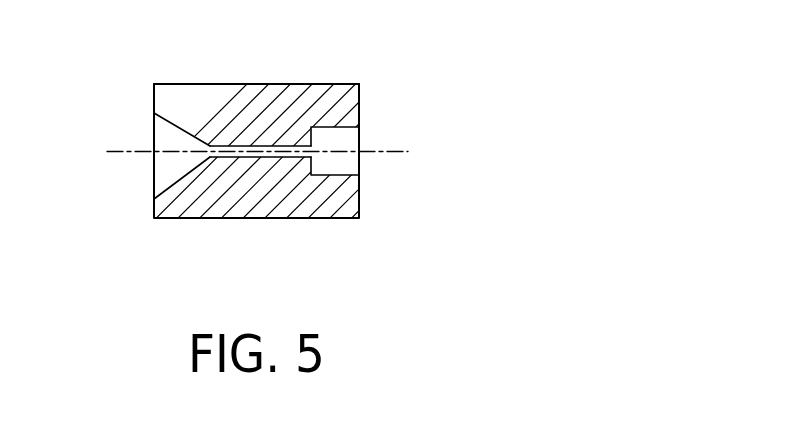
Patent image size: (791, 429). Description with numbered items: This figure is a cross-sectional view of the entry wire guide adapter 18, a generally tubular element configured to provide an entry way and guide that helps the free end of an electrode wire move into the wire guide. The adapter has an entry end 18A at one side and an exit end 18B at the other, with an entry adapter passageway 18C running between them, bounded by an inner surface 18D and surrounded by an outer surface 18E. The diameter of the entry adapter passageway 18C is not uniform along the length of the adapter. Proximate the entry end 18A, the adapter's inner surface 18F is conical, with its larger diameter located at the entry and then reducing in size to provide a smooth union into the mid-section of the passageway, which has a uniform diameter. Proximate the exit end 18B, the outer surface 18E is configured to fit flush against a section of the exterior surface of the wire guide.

The entry wire guide adapter 18 is at (318, 193).
The entry end 18A is at (154, 202).
The exit end 18B is at (359, 188).
The entry adapter passageway 18C is at (242, 157).
The inner surface 18D is at (178, 138).
The outer surface 18E is at (311, 84).
The inner surface proximate entry end 18F is at (182, 138).